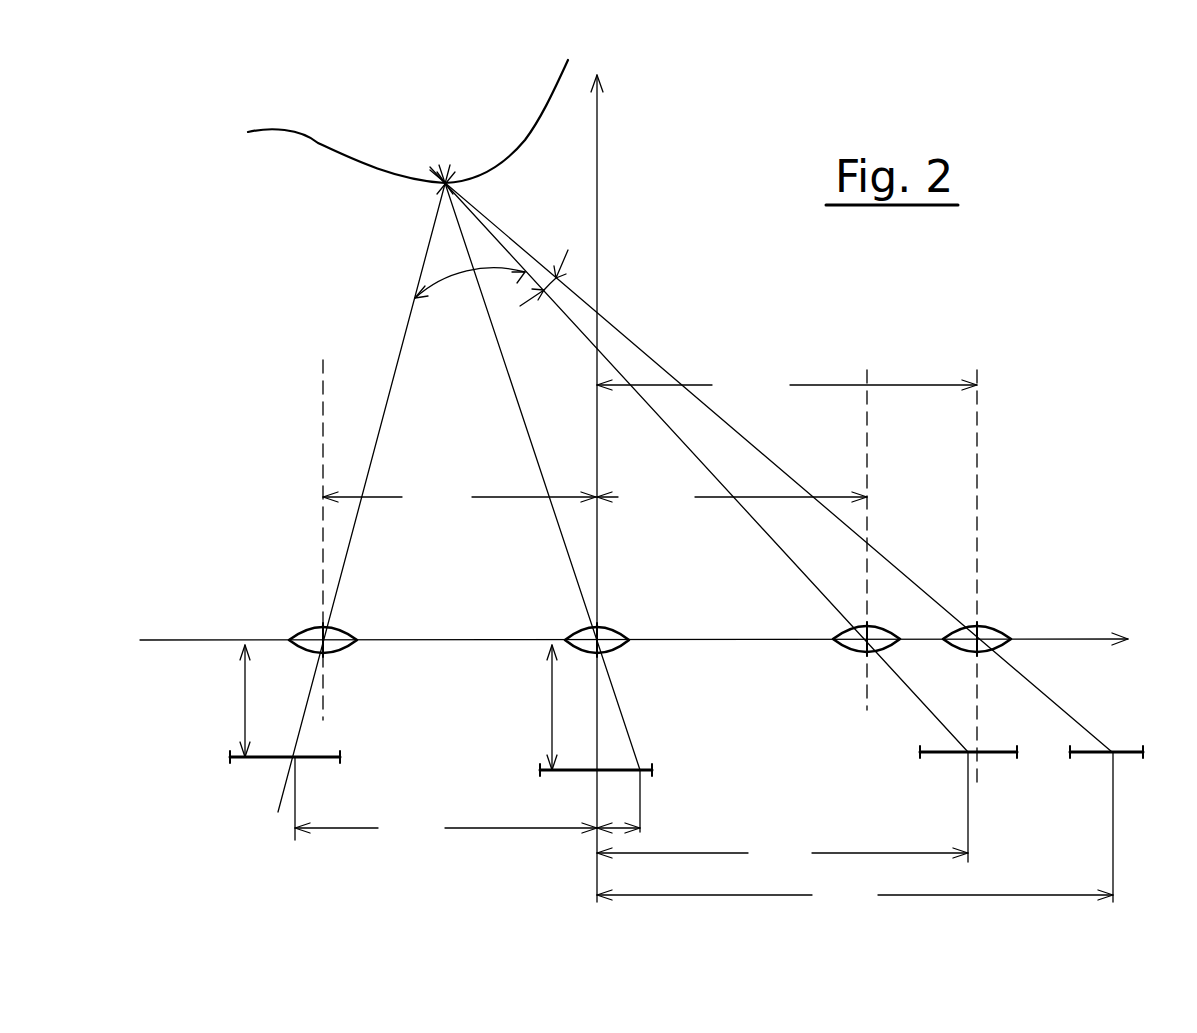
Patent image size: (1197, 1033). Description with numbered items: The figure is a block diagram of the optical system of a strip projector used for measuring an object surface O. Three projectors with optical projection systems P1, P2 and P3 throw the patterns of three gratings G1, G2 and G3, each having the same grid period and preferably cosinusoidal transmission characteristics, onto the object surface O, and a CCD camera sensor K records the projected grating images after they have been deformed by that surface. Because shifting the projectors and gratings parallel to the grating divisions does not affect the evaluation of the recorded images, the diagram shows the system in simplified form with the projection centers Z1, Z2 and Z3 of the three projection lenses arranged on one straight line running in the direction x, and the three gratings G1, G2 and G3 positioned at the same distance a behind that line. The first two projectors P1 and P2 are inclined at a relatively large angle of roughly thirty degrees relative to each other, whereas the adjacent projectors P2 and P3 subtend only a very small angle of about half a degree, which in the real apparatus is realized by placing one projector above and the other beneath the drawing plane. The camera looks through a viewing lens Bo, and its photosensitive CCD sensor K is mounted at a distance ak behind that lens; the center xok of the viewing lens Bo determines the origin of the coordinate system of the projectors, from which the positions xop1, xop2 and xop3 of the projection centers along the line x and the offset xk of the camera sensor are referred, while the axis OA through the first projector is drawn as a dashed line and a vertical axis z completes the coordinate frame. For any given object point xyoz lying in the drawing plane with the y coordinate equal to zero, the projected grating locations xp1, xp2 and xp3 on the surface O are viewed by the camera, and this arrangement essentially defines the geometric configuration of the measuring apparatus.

The object surface O is at (318, 145).
The object point xyoz is at (463, 156).
The straight line in x-direction x is at (634, 656).
The z coordinate axis z is at (609, 485).
The optical axis OA is at (312, 528).
The first projector P1 is at (300, 630).
The second projector P2 is at (830, 636).
The third projector P3 is at (972, 628).
The first projection center Z1 is at (318, 624).
The second projection center Z2 is at (858, 656).
The third projection center Z3 is at (970, 656).
The viewing lens Bo is at (610, 648).
The center of the viewing lens xok is at (600, 632).
The camera sensor K is at (580, 774).
The first grating G1 is at (270, 762).
The second grating G2 is at (998, 762).
The third grating G3 is at (1130, 762).
The grating distance a is at (244, 701).
The sensor distance ak is at (555, 707).
The camera image offset xk is at (615, 830).
The first projected grating location xp1 is at (446, 803).
The second projected grating location xp2 is at (782, 813).
The third projected grating location xp3 is at (855, 834).
The lens 1 position xop1 is at (459, 500).
The lens 2 position xop2 is at (732, 500).
The lens 3 position xop3 is at (787, 388).